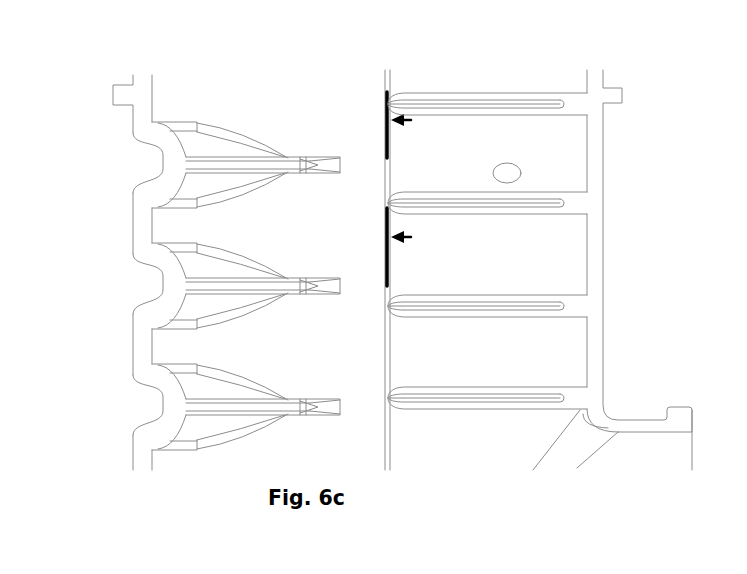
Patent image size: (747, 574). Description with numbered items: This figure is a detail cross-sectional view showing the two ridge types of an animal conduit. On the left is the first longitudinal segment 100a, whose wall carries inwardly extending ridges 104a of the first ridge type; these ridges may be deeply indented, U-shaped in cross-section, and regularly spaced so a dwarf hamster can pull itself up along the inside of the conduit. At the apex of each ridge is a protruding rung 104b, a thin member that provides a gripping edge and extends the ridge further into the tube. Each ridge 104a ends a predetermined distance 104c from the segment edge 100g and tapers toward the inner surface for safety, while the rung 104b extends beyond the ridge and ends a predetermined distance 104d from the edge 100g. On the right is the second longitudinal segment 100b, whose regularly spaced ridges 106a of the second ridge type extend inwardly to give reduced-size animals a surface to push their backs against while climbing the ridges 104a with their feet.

The first longitudinal segment 100a is at (172, 352).
The second longitudinal segment 100b is at (560, 160).
The edge of the longitudinal segment 100g is at (385, 423).
The ridge of a first ridge type 104a is at (178, 164).
The protruding rung 104b is at (201, 160).
The predetermined distance from the edge to the ridge end 104c is at (282, 263).
The predetermined distance from the edge to the rung end 104d is at (338, 145).
The ridge of a second ridge type 106a is at (566, 205).